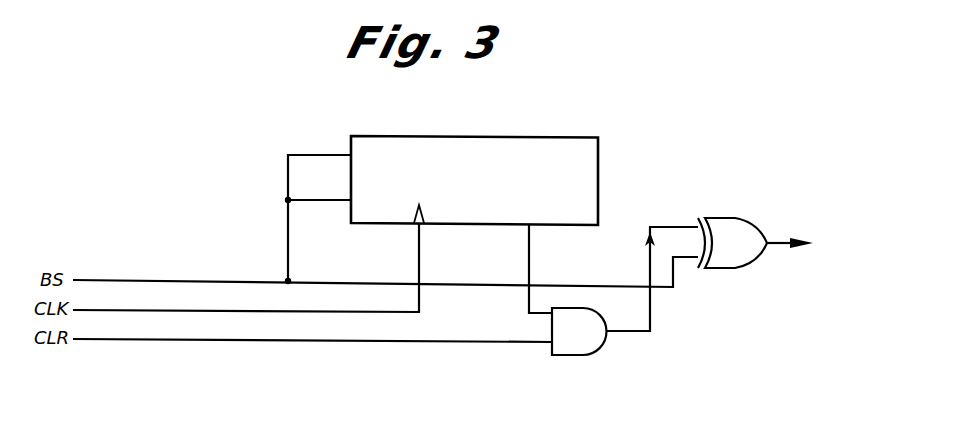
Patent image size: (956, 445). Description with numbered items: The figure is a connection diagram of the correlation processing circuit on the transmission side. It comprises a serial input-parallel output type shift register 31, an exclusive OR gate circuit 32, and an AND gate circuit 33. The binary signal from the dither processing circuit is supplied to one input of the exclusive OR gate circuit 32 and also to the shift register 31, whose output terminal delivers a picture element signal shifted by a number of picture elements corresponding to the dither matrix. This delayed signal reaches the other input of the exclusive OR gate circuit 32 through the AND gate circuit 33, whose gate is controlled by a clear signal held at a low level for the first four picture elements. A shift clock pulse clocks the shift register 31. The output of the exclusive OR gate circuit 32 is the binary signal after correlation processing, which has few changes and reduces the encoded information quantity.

The shift register 31 is at (493, 148).
The exclusive OR gate circuit 32 is at (732, 229).
The AND gate circuit 33 is at (580, 347).